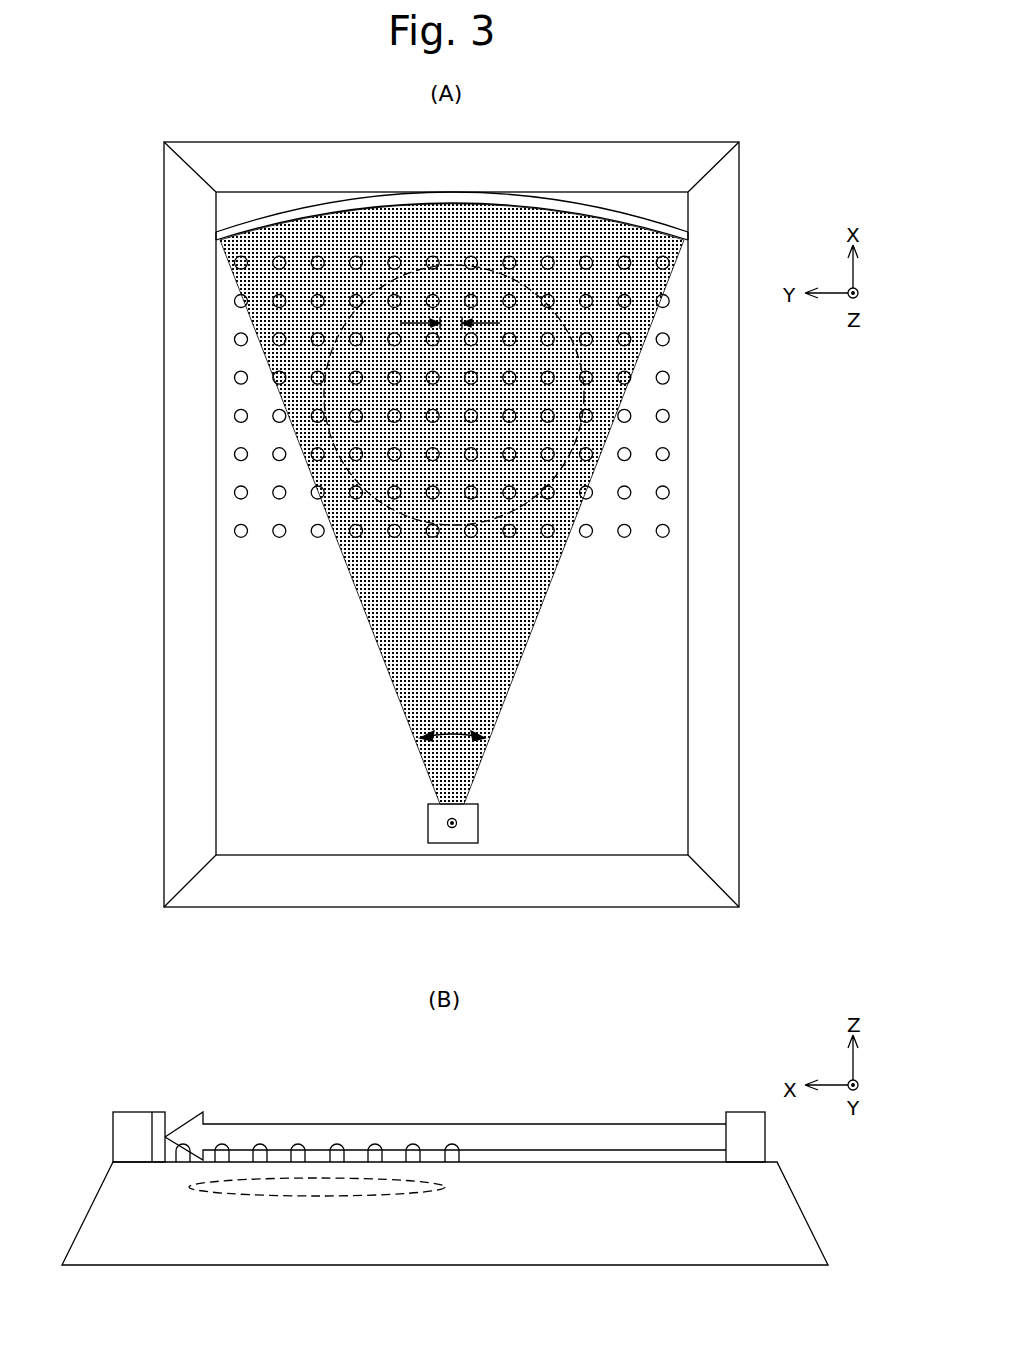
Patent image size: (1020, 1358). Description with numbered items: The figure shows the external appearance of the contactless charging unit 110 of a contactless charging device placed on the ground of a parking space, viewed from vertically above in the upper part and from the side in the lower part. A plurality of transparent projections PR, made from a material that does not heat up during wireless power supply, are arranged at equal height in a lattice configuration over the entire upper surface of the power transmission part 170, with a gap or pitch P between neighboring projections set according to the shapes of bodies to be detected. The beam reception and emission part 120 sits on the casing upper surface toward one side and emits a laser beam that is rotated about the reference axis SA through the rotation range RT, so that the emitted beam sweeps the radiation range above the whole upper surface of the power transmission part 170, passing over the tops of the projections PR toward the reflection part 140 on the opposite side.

The contactless charging unit 110 is at (769, 163).
The beam reception and emission part 120 is at (481, 825).
The reflection part 140 is at (260, 217).
The power transmission part 170 is at (325, 408).
The transparent projections PR is at (668, 450).
The rotation range of the mirror RT is at (445, 730).
The reference axis SA is at (447, 822).
The pitch P is at (450, 316).